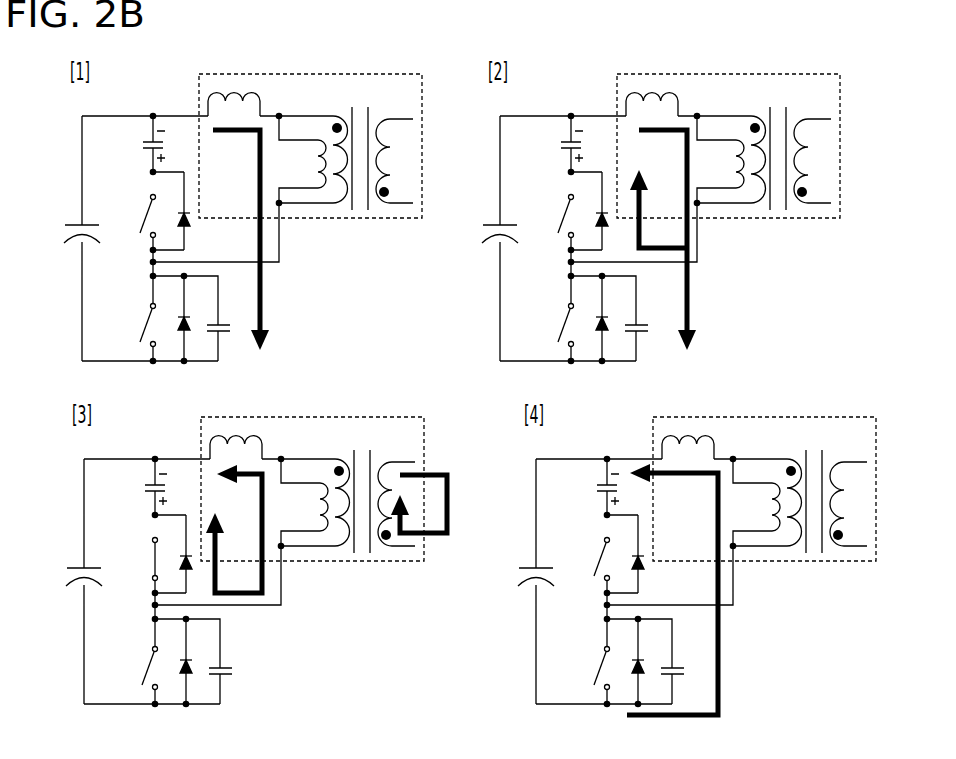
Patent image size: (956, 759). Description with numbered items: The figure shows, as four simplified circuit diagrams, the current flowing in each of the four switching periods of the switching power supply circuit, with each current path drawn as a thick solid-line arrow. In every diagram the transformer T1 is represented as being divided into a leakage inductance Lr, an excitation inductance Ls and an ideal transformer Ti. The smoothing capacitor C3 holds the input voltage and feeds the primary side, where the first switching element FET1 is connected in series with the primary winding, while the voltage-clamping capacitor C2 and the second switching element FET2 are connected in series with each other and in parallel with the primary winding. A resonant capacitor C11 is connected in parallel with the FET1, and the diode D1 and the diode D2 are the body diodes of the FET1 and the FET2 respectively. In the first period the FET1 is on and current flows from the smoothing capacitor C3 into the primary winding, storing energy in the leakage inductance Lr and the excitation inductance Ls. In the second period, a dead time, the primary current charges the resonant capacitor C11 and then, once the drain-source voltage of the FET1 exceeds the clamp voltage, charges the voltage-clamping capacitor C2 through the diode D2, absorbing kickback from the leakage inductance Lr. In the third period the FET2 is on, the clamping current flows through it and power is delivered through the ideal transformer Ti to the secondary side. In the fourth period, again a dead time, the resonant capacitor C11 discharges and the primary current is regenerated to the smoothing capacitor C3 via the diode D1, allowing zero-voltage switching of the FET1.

The transformer T1 is at (510, 313).
The leakage inductance Lr is at (483, 268).
The ideal transformer Ti is at (591, 315).
The excitation inductance Ls is at (526, 331).
The voltage-clamping capacitor C2 is at (356, 315).
The smoothing capacitor C3 is at (297, 384).
The second switching element FET2 is at (347, 379).
The body diode of the FET2 D2 is at (400, 382).
The first switching element FET1 is at (347, 487).
The body diode of the FET1 D1 is at (401, 490).
The resonant capacitor C11 is at (447, 489).